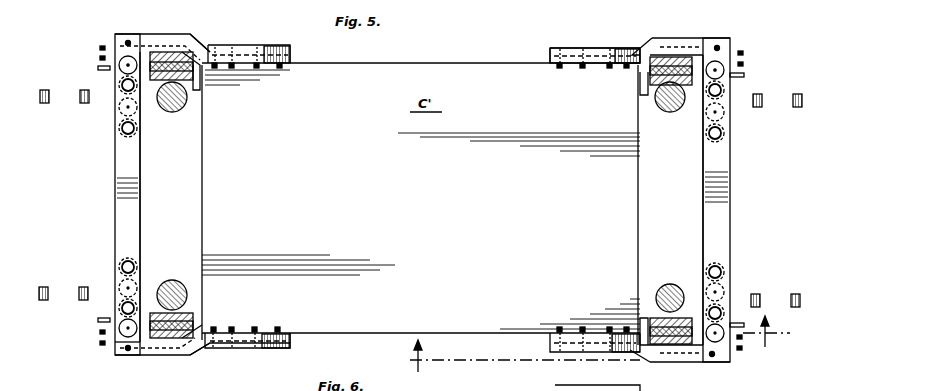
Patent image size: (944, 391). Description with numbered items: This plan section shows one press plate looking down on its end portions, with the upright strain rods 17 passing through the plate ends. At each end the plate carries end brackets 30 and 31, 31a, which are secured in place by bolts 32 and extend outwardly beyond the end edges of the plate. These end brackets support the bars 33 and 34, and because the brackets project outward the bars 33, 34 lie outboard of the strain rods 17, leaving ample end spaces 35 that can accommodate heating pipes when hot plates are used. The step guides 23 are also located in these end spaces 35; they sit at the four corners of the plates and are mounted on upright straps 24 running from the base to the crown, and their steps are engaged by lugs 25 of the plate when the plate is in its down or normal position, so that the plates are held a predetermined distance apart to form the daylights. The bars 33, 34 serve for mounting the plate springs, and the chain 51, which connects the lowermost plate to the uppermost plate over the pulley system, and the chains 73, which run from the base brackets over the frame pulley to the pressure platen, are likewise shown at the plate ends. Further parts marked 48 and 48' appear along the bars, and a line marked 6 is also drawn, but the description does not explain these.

The end bracket 31 is at (130, 34).
The end bracket 31a is at (128, 355).
The step guide 23 is at (158, 52).
The upright strap 24 is at (172, 52).
The lug 25 is at (205, 40).
The bolt 32 is at (286, 47).
The end bracket 30 is at (550, 52).
The chain 51 is at (99, 48).
The large roller 48 is at (417, 199).
The small roller 48' is at (420, 199).
The chain 73 is at (82, 104).
The bar 34 is at (115, 160).
The bar 33 is at (720, 165).
The end space 35 is at (421, 205).
The strain rod 17 is at (162, 108).
The section line 6- 6 is at (600, 348).